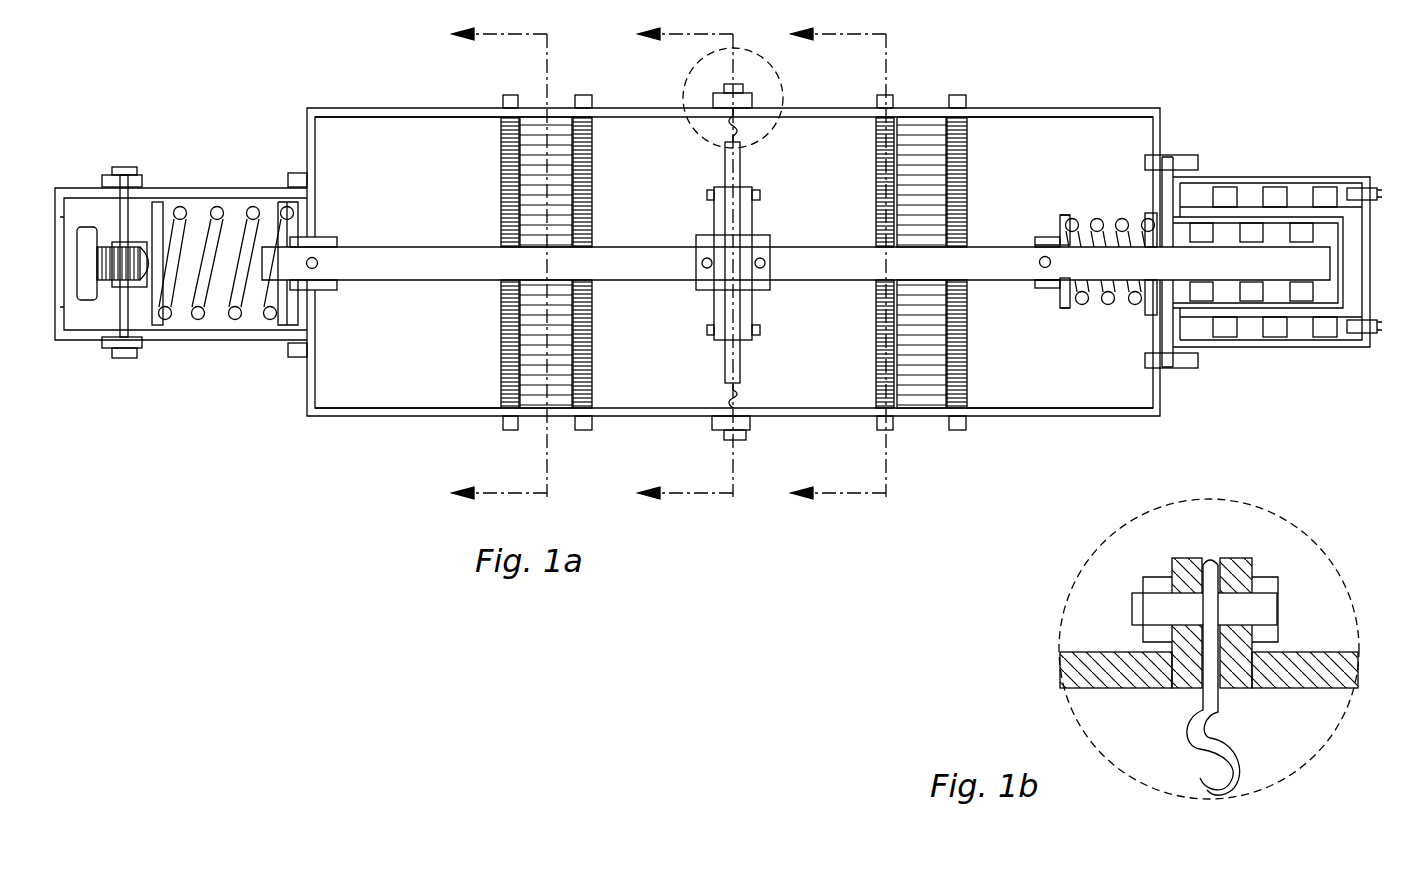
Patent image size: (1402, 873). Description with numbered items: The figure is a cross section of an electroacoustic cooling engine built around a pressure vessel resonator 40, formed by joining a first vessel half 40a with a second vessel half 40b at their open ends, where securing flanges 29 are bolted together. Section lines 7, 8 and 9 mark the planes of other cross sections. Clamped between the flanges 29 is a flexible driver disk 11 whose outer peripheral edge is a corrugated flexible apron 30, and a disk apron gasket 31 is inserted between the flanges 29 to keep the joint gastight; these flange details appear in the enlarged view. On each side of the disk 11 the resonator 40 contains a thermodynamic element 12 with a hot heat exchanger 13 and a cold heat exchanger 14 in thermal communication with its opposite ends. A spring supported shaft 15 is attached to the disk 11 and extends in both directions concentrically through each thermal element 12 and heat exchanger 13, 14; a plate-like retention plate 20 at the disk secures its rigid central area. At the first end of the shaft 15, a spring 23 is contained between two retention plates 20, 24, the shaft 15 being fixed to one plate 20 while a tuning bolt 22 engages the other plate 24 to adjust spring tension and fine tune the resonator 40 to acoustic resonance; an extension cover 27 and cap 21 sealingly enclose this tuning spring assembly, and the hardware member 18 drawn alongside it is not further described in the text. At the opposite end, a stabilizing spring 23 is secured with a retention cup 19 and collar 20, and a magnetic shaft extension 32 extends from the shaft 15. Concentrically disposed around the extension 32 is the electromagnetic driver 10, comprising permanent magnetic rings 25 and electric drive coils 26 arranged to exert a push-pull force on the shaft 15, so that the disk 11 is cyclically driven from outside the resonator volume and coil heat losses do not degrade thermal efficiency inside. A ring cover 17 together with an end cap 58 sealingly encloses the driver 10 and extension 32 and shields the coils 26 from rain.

In FIG. 1A, the section line 7- 7 is at (694, 262).
In FIG. 1A, the section line 8- 8 is at (508, 264).
In FIG. 1A, the section line 9- 9 is at (848, 264).
In FIG. 1A, the electromagnetic driver 10 is at (1303, 327).
In FIG. 1A, the flexible driver disk 11 is at (744, 172).
In FIG. 1A, the thermodynamic element 12 is at (918, 392).
In FIG. 1A, the hot heat exchanger 13 is at (892, 100).
In FIG. 1A, the cold heat exchanger 14 is at (960, 100).
In FIG. 1A, the shaft 15 is at (996, 244).
In FIG. 1A, the ring cover 17 is at (1333, 177).
In FIG. 1A, the adjustment bolt 18 is at (128, 212).
In FIG. 1A, the retention cup 19 is at (1063, 310).
In FIG. 1A, the retention plate 20 is at (697, 290).
In FIG. 1A, the cap 21 is at (92, 340).
In FIG. 1A, the tuning bolt 22 is at (86, 228).
In FIG. 1A, the spring 23 is at (210, 236).
In FIG. 1A, the retention plate 24 is at (155, 312).
In FIG. 1A, the permanent magnetic rings 25 is at (1203, 233).
In FIG. 1A, the electric drive coils 26 is at (1224, 330).
In FIG. 1A, the extension cover 27 is at (265, 197).
In FIG. 1A, the securing flanges 29 is at (745, 90).
In FIG. 1B, the securing flanges 29 is at (1175, 555).
In FIG. 1A, the flexible apron 30 is at (731, 127).
In FIG. 1B, the flexible apron 30 is at (1211, 556).
In FIG. 1B, the disk apron gasket 31 is at (1204, 556).
In FIG. 1A, the magnetic shaft extension 32 is at (1320, 268).
In FIG. 1A, the pressure vessel resonator 40 is at (1058, 107).
In FIG. 1A, the first vessel half 40a is at (395, 107).
In FIG. 1A, the second vessel half 40b is at (1130, 107).
In FIG. 1A, the end cap 58 is at (1372, 228).